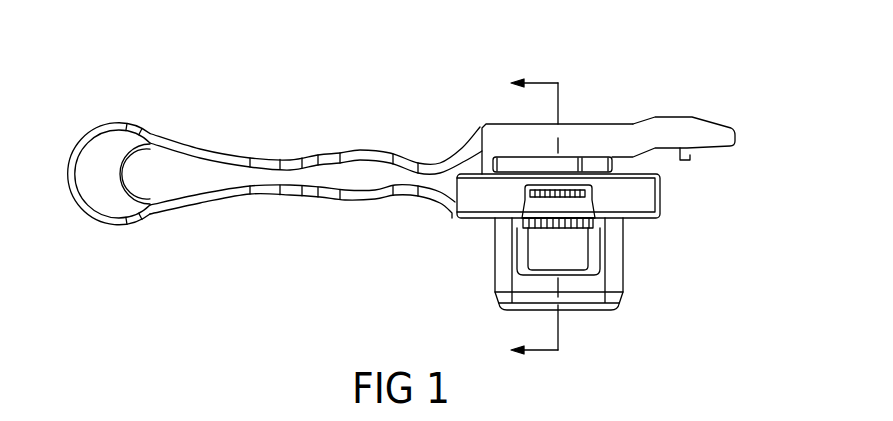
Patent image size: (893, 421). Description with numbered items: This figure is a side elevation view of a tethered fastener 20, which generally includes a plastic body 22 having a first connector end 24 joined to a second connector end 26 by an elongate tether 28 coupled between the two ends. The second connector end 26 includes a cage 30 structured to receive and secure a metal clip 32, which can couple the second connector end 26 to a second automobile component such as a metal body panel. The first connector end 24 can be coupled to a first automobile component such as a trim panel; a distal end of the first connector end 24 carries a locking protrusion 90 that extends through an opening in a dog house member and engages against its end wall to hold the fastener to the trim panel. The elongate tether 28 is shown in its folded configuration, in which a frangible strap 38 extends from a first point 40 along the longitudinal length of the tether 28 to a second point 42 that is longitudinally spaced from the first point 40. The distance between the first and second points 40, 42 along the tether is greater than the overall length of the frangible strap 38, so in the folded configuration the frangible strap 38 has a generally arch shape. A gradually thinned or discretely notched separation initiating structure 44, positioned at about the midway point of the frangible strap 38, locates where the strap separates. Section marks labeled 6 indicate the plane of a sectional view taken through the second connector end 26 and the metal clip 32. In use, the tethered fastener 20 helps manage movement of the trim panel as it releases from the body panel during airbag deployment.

The tethered fastener 20 is at (455, 85).
The plastic body 22 is at (468, 130).
The first connector end 24 is at (669, 119).
The second connector end 26 is at (650, 197).
The elongate tether 28 is at (293, 188).
The cage 30 is at (615, 262).
The metal clip 32 is at (540, 255).
The frangible strap 38 is at (125, 185).
The first point 40 is at (150, 137).
The second point 42 is at (150, 211).
The separation initiating structure 44 is at (125, 173).
The locking protrusion 90 is at (686, 157).
The section line 6- 6 is at (522, 218).